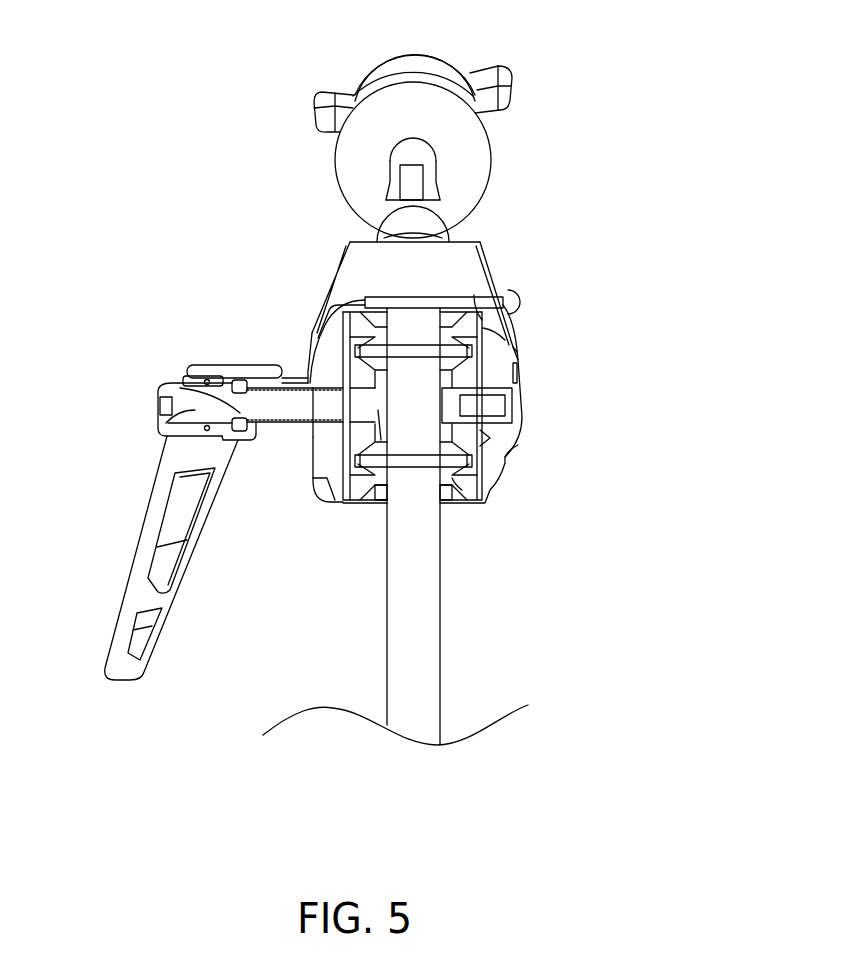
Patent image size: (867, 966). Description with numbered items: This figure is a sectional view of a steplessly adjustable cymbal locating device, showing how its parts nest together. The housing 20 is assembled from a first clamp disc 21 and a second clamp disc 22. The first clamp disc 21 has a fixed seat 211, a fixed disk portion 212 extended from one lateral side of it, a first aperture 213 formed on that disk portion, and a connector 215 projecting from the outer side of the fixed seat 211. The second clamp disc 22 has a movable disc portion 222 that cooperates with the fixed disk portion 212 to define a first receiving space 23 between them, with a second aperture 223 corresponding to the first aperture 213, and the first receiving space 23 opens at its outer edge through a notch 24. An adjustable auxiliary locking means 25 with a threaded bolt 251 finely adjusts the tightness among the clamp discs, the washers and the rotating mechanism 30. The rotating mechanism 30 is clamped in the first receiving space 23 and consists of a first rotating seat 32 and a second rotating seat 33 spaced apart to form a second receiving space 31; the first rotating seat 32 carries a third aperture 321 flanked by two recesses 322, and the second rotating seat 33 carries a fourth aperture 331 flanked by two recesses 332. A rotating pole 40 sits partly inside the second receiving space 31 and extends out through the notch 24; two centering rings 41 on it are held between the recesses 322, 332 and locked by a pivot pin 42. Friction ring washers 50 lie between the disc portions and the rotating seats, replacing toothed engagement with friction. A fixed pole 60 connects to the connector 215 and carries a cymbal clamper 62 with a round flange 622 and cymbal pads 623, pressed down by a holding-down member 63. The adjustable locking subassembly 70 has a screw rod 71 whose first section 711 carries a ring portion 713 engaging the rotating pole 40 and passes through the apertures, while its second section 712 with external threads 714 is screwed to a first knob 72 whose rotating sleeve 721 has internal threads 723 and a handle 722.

The housing 20 is at (439, 356).
The first clamp disc 21 is at (407, 293).
The fixed seat 211 is at (363, 262).
The fixed disk portion 212 is at (325, 318).
The first aperture 213 is at (305, 372).
The connector 215 is at (455, 238).
The second clamp disc 22 is at (488, 385).
The movable disc portion 222 is at (508, 458).
The second aperture 223 is at (517, 373).
The first receiving space 23 is at (483, 328).
The notch 24 is at (382, 507).
The adjustable auxiliary locking means 25 is at (545, 285).
The threaded bolt 251 is at (520, 305).
The rotating mechanism 30 is at (411, 436).
The second receiving space 31 is at (472, 350).
The first rotating seat 32 is at (361, 393).
The third aperture 321 is at (314, 480).
The recesses 322 is at (338, 326).
The second rotating seat 33 is at (477, 417).
The fourth aperture 331 is at (490, 438).
The recesses 332 is at (465, 468).
The rotating pole 40 is at (440, 640).
The centering rings 41 is at (381, 503).
The pivot pin 42 is at (455, 490).
The friction ring washer 50 is at (474, 295).
The fixed pole 60 is at (437, 185).
The cymbal clamper 62 is at (495, 138).
The round flange 622 is at (355, 150).
The cymbal pads 623 is at (406, 70).
The holding-down member 63 is at (515, 90).
The adjustable locking subassembly 70 is at (344, 483).
The screw rod 71 is at (369, 473).
The first section 711 is at (452, 480).
The second section 712 is at (185, 390).
The ring portion 713 is at (378, 412).
The external threads 714 is at (265, 440).
The first knob 72 is at (165, 531).
The rotating sleeve 721 is at (168, 423).
The handle 722 is at (140, 525).
The internal threads 723 is at (285, 440).